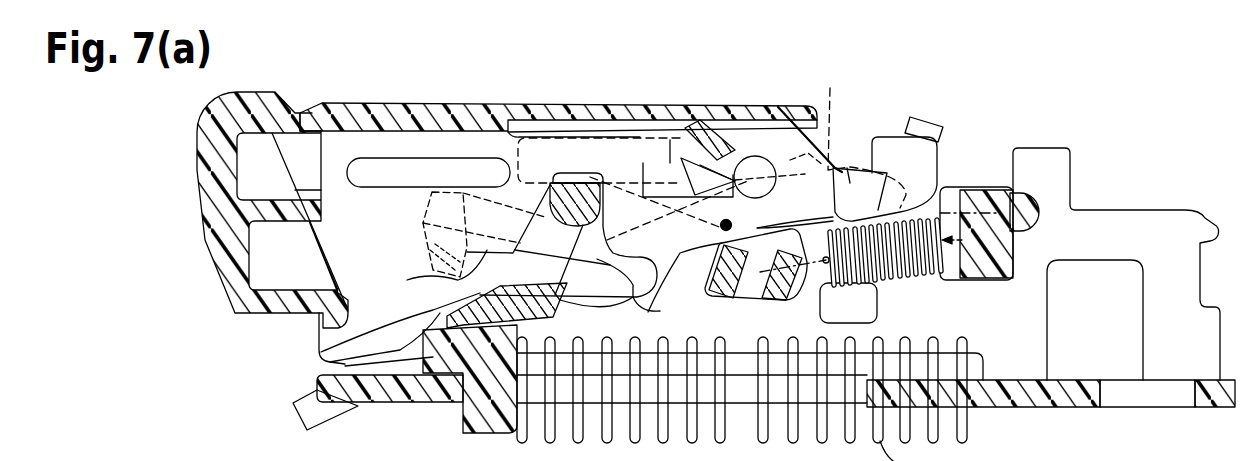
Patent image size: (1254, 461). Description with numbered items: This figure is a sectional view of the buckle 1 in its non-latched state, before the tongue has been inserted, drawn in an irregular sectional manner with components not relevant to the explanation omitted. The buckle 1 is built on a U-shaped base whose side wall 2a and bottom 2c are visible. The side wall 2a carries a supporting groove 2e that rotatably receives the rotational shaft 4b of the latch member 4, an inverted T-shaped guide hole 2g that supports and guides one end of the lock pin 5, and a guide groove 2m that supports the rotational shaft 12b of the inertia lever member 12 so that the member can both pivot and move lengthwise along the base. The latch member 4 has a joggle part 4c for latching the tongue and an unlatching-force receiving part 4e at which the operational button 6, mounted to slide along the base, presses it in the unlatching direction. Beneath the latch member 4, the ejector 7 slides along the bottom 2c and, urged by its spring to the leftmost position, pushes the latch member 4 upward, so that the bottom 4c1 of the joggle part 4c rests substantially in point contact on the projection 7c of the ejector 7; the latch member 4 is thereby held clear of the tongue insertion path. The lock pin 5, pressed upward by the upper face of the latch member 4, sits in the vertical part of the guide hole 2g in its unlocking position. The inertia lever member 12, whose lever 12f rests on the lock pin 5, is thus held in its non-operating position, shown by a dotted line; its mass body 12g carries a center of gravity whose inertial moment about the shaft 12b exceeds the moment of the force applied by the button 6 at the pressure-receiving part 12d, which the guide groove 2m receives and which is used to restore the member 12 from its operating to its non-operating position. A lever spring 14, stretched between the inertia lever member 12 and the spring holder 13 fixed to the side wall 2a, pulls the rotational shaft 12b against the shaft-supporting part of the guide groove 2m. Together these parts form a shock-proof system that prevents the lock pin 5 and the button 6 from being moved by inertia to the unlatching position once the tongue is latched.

The buckle 1 is at (352, 94).
The side wall 2a is at (1100, 228).
The bottom 2c is at (1027, 406).
The supporting groove 2e is at (877, 177).
The inverted T-shaped guide hole 2g is at (437, 277).
The guide groove 2m is at (650, 180).
The latch member 4 is at (660, 311).
The rotational shaft 4b is at (853, 187).
The joggle part 4c is at (330, 365).
The bottom of the joggle part 4c1 is at (372, 395).
The unlatching-force receiving part 4e is at (930, 123).
The lock pin 5 is at (535, 207).
The operational button 6 is at (250, 112).
The ejector 7 is at (462, 416).
The projection 7c is at (418, 405).
The inertia lever member 12 is at (748, 148).
The rotational shaft 12b is at (763, 170).
The pressure-receiving part 12d is at (700, 137).
The lever 12f is at (562, 132).
The mass body 12g is at (758, 299).
The spring holder 13 is at (985, 200).
The lever spring 14 is at (906, 283).